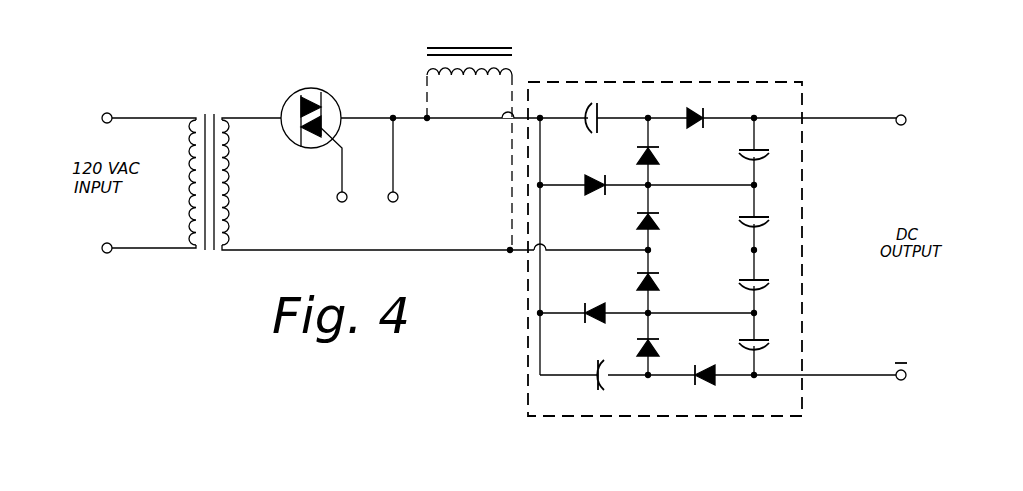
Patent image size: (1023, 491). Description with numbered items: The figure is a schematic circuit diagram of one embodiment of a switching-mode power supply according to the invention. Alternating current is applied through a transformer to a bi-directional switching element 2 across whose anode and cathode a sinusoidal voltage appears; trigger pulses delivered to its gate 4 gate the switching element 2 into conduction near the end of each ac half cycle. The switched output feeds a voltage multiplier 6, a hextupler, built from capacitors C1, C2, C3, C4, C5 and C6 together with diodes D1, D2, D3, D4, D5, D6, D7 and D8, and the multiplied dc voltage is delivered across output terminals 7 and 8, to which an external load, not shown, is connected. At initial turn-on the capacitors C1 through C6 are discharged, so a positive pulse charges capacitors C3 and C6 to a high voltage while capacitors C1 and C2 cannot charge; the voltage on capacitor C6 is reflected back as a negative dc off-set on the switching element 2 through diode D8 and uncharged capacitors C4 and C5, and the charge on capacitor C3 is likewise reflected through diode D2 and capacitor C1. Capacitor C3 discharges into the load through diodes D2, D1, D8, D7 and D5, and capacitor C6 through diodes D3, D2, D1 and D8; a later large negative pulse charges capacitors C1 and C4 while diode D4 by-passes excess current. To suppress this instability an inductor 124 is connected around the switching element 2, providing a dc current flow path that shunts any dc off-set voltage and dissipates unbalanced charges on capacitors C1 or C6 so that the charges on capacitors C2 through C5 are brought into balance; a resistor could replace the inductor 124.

The switching element 2 is at (293, 87).
The gate 4 is at (339, 201).
The voltage multiplier 6 is at (641, 82).
The output terminal 7 is at (901, 115).
The output terminal 8 is at (901, 380).
The inductor 124 is at (476, 46).
The capacitor C1 is at (589, 109).
The capacitor C2 is at (764, 156).
The capacitor C3 is at (764, 224).
The capacitor C4 is at (764, 285).
The capacitor C5 is at (764, 345).
The capacitor C6 is at (603, 383).
The diode D1 is at (695, 109).
The diode D2 is at (662, 156).
The diode D3 is at (588, 175).
The diode D4 is at (662, 220).
The diode D5 is at (662, 281).
The diode D6 is at (592, 301).
The diode D7 is at (663, 346).
The diode D8 is at (705, 385).